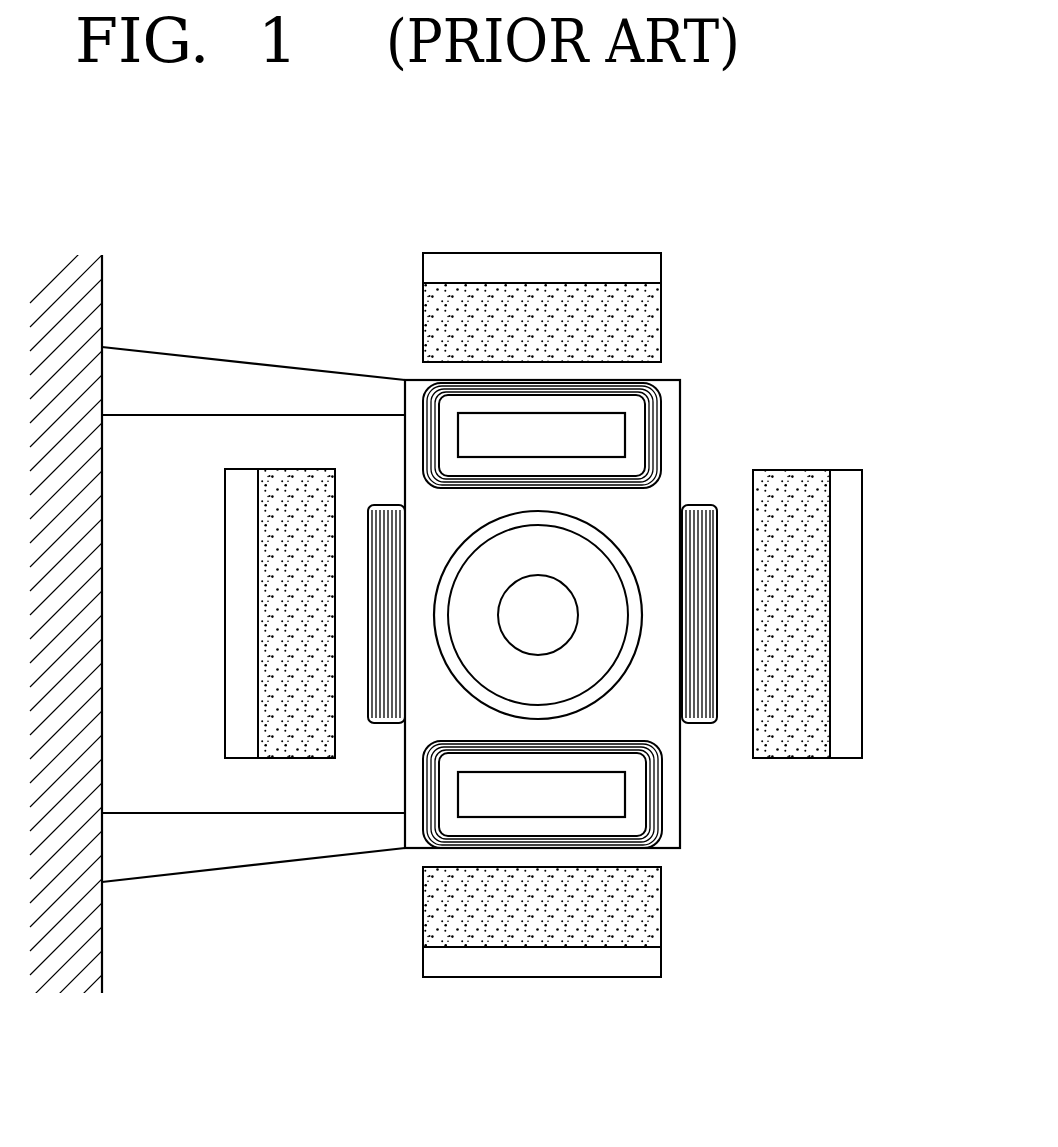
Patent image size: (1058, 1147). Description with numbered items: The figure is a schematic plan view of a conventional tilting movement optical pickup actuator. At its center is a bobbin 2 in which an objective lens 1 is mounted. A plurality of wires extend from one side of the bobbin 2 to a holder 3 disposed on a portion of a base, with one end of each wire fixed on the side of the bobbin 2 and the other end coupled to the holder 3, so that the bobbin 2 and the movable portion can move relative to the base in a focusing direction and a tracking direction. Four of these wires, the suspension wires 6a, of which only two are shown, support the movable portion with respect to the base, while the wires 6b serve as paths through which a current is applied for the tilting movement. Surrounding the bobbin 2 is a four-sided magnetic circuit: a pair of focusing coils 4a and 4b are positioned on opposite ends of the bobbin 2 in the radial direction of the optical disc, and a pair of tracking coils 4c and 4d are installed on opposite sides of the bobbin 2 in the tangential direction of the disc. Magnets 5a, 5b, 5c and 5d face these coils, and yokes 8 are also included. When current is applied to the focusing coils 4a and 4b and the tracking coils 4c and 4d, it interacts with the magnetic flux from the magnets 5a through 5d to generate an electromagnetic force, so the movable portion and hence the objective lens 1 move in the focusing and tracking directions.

The objective lens 1 is at (555, 603).
The bobbin 2 is at (405, 457).
The holder 3 is at (65, 953).
The focusing coil 4a is at (655, 428).
The focusing coil 4b is at (655, 838).
The tracking coil 4c is at (386, 724).
The tracking coil 4d is at (706, 725).
The magnet 5a is at (432, 312).
The magnet 5b is at (645, 912).
The magnet 5c is at (297, 745).
The magnet 5d is at (805, 745).
The suspension wire 6a is at (155, 420).
The wire for tilting current 6b is at (191, 350).
The yoke 8 is at (432, 263).